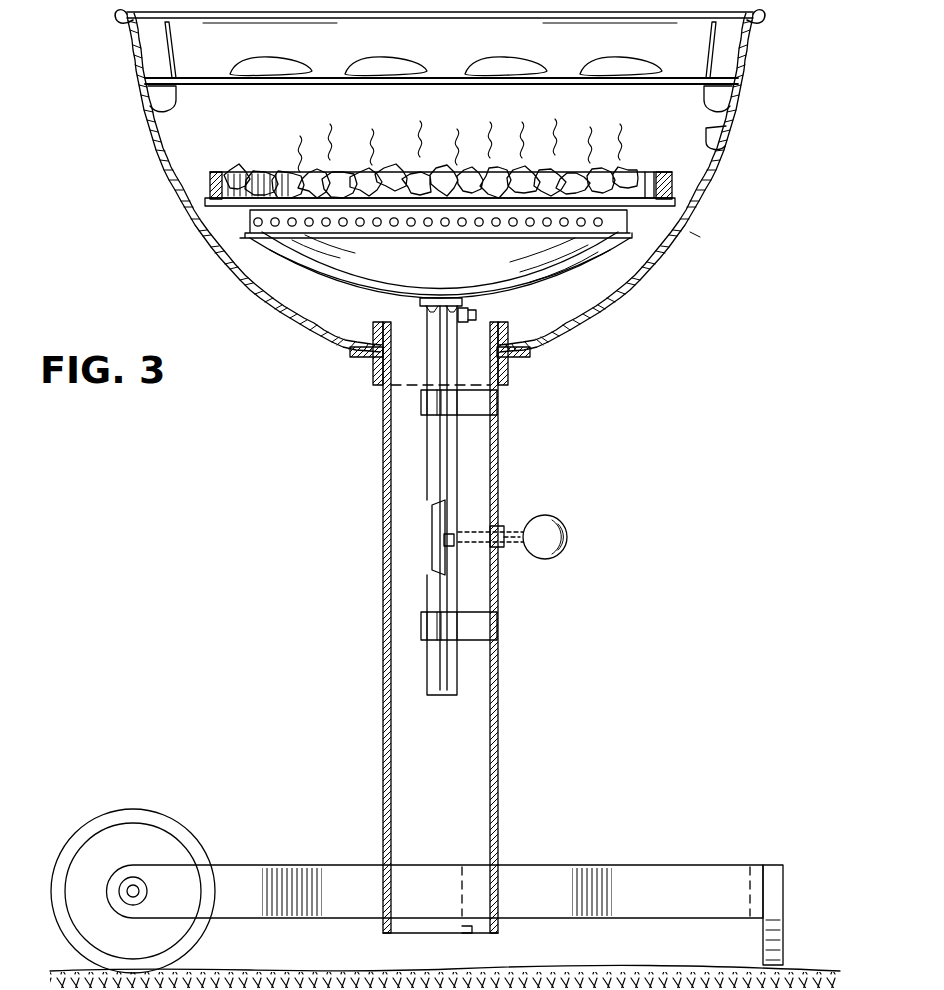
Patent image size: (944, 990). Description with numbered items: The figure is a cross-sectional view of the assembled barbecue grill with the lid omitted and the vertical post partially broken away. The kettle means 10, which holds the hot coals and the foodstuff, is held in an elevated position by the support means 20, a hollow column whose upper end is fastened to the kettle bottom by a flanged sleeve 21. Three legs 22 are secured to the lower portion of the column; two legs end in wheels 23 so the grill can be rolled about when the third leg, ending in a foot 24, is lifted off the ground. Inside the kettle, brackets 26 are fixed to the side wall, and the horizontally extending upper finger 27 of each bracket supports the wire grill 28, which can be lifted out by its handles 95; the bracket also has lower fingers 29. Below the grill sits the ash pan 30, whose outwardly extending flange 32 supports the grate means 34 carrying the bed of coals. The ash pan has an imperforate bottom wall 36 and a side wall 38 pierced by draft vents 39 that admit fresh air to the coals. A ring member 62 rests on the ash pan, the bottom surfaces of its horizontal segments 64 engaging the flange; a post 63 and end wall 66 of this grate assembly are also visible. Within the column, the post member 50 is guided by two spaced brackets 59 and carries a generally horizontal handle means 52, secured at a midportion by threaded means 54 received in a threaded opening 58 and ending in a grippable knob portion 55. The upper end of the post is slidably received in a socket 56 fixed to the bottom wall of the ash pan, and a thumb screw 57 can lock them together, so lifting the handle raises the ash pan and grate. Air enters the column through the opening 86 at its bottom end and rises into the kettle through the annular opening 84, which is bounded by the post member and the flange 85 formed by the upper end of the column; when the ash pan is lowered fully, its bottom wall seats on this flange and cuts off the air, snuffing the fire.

The kettle means 10 is at (712, 212).
The support means 20 is at (503, 446).
The flanged sleeve 21 is at (508, 376).
The legs 22 is at (602, 862).
The wheels 23 is at (184, 840).
The foot 24 is at (781, 947).
The brackets 26 is at (724, 139).
The upper finger 27 is at (724, 101).
The wire grill 28 is at (160, 100).
The lower fingers 29 is at (691, 232).
The ash pan 30 is at (308, 280).
The outwardly extending flange 32 is at (298, 244).
The grate means 34 is at (250, 173).
The bottom wall 36 is at (402, 274).
The side wall 38 is at (312, 255).
The draft vents 39 is at (586, 228).
The post member 50 is at (432, 446).
The handle means 52 is at (514, 550).
The threaded means 54 is at (448, 541).
The knob portion 55 is at (568, 530).
The socket 56 is at (383, 362).
The thumb screw 57 is at (571, 302).
The threaded opening 58 is at (450, 543).
The brackets 59 is at (486, 398).
The ring member 62 is at (205, 186).
The grate post 63 is at (648, 182).
The horizontal segments 64 is at (262, 207).
The grate end wall 66 is at (668, 182).
The annular opening 84 is at (326, 324).
The flange 85 is at (362, 350).
The opening 86 is at (412, 300).
The handles 95 is at (166, 52).